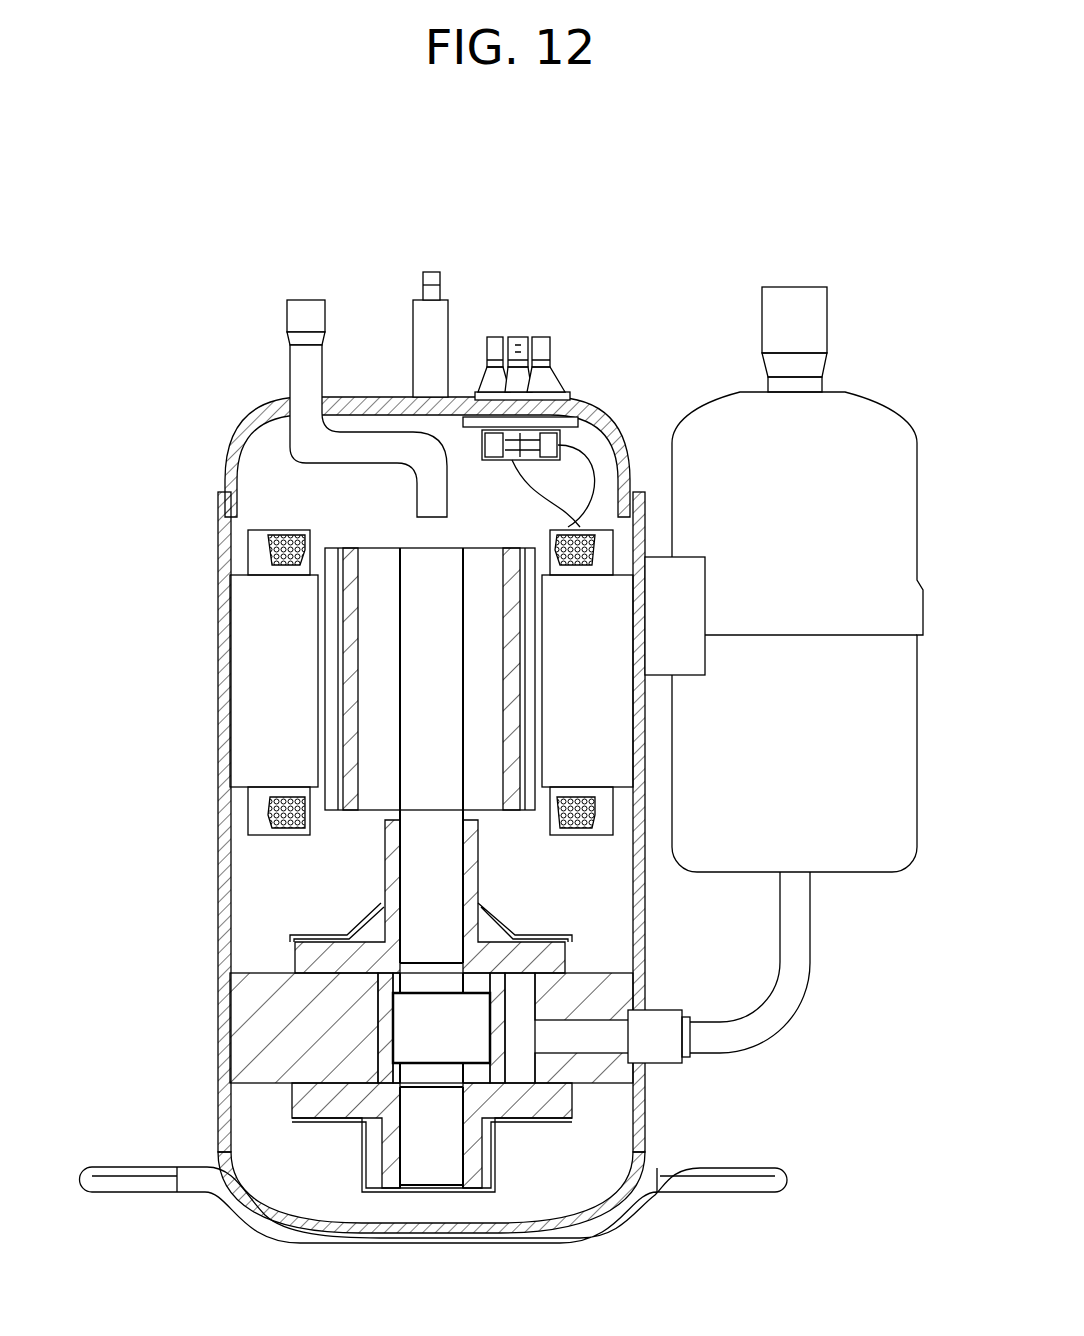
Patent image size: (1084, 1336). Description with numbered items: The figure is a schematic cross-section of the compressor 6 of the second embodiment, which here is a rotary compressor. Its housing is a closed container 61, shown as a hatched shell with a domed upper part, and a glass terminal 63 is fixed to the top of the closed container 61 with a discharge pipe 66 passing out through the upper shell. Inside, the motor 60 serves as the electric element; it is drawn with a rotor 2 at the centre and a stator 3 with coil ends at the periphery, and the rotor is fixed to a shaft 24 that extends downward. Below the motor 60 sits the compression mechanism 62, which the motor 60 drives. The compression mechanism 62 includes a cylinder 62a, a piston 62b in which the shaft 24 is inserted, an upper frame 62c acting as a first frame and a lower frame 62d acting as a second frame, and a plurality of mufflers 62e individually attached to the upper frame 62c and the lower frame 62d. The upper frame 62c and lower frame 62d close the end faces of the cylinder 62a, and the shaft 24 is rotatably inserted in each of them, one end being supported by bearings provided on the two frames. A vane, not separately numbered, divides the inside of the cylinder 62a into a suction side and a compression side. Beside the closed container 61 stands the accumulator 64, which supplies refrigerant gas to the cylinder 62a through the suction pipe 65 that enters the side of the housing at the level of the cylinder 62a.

The compressor 6 is at (220, 203).
The discharge pipe 66 is at (323, 375).
The glass terminal 63 is at (553, 355).
The accumulator 64 is at (880, 410).
The motor 60 is at (320, 515).
The closed container 61 is at (218, 524).
The shaft 24 is at (428, 565).
The stator 3 is at (258, 845).
The rotor 2 is at (345, 812).
The compression mechanism 62 is at (336, 1142).
The cylinder 62a is at (255, 972).
The piston 62b is at (385, 1027).
The upper frame 62c is at (548, 946).
The lower frame 62d is at (528, 1105).
The mufflers 62e is at (366, 925).
The suction pipe 65 is at (793, 1012).